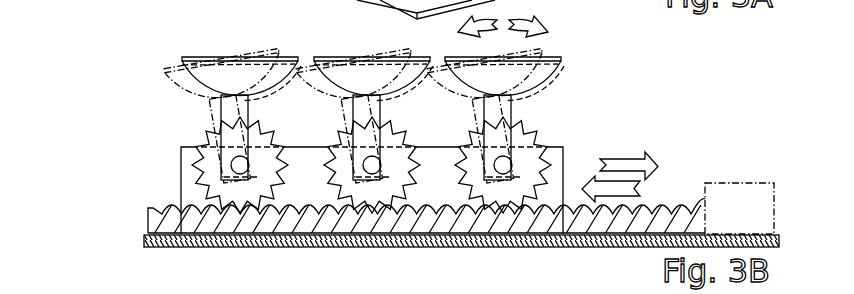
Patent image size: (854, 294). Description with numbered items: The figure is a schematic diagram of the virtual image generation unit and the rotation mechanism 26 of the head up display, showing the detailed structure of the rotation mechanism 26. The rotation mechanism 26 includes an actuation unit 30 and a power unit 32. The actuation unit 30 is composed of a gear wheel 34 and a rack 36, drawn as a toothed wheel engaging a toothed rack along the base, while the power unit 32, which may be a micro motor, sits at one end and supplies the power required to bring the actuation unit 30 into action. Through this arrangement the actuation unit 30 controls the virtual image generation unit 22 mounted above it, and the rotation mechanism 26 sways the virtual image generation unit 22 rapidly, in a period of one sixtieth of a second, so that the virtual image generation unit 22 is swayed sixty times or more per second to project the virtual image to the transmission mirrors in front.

The virtual image generation unit 22 is at (197, 62).
The rotation mechanism 26 is at (101, 124).
The actuation unit 30 is at (117, 181).
The power unit 32 is at (740, 187).
The gear wheel 34 is at (207, 138).
The rack 36 is at (158, 221).